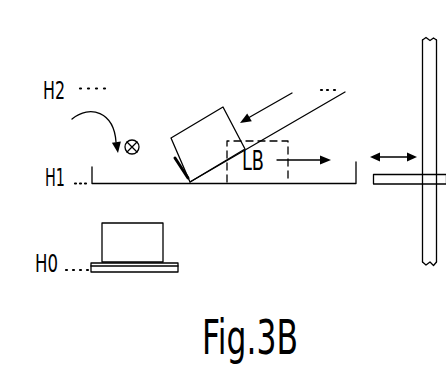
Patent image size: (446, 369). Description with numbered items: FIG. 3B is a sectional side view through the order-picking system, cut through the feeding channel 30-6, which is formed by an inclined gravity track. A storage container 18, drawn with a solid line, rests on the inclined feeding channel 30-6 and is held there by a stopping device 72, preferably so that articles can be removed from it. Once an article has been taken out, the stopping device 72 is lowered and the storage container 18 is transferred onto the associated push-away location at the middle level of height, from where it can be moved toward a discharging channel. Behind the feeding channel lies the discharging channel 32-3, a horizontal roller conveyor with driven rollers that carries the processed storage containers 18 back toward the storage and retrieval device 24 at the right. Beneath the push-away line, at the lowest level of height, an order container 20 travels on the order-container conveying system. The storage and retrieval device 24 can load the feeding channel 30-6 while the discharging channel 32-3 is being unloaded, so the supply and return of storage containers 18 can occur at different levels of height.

The storage container 18 is at (197, 121).
The order container 20 is at (164, 242).
The storage and retrieval device 24 is at (390, 247).
The feeding channel 30-6 is at (316, 110).
The discharging channel 32-3 is at (318, 184).
The stopping device 72 is at (176, 163).